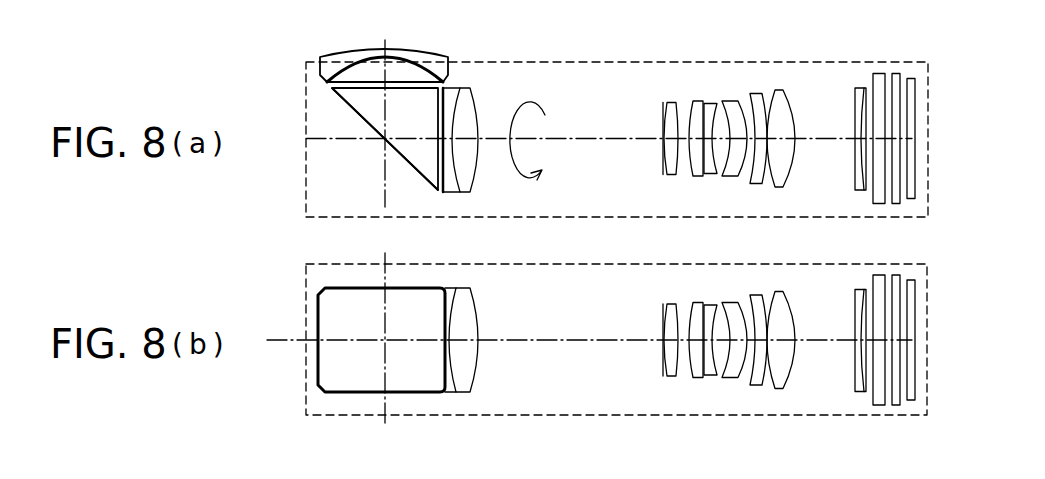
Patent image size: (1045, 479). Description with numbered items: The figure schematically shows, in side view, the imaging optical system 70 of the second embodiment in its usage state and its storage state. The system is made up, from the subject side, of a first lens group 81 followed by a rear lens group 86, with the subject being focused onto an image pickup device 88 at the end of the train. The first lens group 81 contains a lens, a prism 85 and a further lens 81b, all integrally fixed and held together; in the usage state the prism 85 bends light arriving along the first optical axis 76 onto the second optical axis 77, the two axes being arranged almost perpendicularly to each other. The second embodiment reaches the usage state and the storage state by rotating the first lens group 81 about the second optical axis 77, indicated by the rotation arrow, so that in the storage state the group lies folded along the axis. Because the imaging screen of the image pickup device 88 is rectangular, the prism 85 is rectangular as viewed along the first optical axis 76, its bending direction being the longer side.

The lens barrel / imaging optical unit 70 is at (590, 62).
The first optical axis 76 is at (385, 97).
The second optical axis 77 is at (603, 139).
The first lens group 81 is at (370, 125).
The lens 81b is at (450, 193).
The prism 85 is at (363, 112).
The rear lens group 86 is at (866, 50).
The image pickup device 88 is at (910, 78).